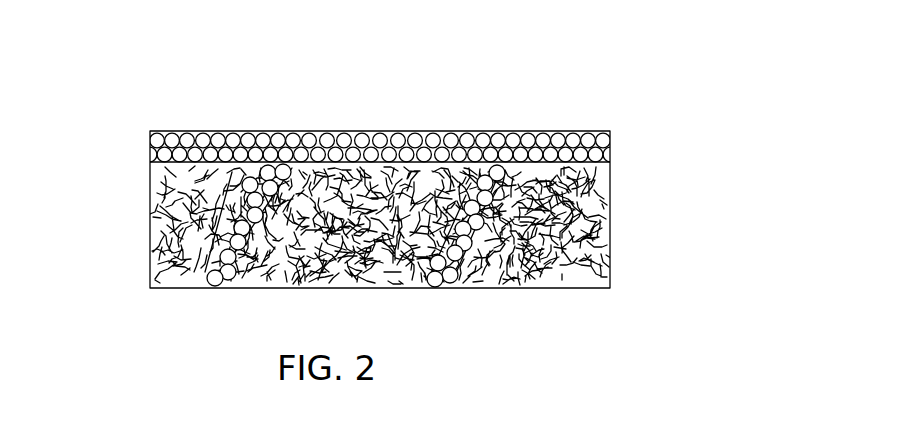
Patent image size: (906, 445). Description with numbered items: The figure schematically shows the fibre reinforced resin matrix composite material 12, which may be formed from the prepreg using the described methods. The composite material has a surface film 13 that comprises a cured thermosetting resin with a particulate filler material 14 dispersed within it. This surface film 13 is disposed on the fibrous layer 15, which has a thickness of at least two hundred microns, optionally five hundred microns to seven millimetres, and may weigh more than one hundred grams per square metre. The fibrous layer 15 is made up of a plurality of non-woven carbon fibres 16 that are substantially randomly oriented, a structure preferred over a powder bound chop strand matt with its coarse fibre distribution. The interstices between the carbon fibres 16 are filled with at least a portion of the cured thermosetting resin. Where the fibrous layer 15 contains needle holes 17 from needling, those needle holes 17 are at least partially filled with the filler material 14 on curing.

The fibre reinforced resin matrix composite material 12 is at (128, 78).
The surface film 13 is at (638, 133).
The particulate filler material 14 is at (520, 141).
The fibrous layer 15 is at (463, 233).
The non-woven carbon fibres 16 is at (535, 253).
The needle holes 17 is at (224, 281).